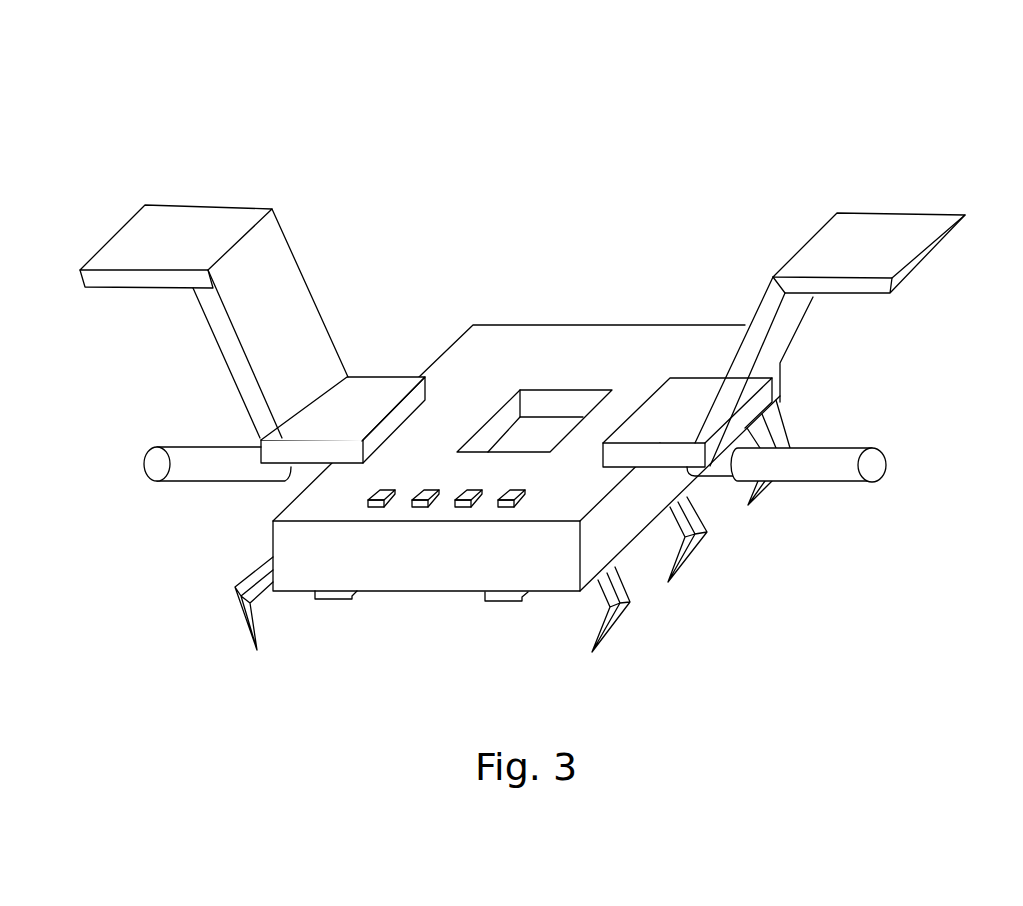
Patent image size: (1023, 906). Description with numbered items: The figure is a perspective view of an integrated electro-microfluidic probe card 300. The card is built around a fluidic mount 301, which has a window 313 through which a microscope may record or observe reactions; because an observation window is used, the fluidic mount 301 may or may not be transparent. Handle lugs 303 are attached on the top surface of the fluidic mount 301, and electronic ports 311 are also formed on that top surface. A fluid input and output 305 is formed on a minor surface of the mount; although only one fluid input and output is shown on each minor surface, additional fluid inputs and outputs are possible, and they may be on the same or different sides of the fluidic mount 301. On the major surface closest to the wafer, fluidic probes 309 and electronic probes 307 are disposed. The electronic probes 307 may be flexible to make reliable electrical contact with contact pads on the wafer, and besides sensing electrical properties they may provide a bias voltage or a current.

The integrated electro-microfluidic probe card 300 is at (191, 119).
The fluidic mount 301 is at (555, 325).
The handle lugs 303 is at (925, 223).
The fluid input and output 305 is at (158, 448).
The electronic probes 307 is at (613, 620).
The fluidic probes 309 is at (502, 602).
The electronic ports 311 is at (382, 501).
The window 313 is at (600, 391).